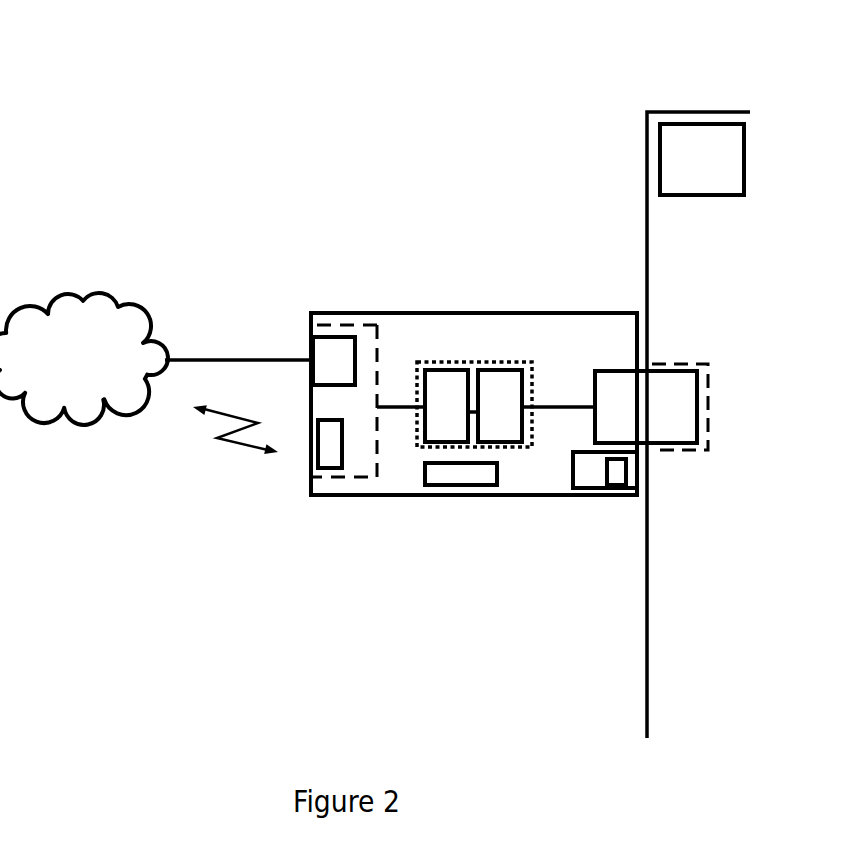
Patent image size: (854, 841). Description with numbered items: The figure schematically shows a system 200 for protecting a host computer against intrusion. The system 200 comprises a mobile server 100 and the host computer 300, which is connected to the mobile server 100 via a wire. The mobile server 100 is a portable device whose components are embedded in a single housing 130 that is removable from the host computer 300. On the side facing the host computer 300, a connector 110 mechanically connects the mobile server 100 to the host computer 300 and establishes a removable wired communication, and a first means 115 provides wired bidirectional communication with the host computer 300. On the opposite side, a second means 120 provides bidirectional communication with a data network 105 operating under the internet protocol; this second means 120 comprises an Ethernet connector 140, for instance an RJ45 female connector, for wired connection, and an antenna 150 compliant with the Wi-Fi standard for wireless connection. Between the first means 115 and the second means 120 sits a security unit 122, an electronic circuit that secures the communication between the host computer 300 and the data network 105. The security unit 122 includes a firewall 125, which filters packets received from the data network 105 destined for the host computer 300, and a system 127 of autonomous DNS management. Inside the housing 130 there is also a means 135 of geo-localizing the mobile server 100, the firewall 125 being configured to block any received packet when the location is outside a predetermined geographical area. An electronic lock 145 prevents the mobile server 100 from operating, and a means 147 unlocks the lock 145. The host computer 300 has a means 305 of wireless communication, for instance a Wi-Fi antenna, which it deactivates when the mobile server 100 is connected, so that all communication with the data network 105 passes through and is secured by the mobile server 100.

The mobile server 100 is at (465, 296).
The data network 105 is at (86, 274).
The connector 110 is at (662, 432).
The first means of wired bidirectional communication 115 is at (615, 383).
The second means of bidirectional communication 120 is at (360, 318).
The security unit 122 is at (518, 447).
The firewall 125 is at (435, 422).
The system of autonomous DNS management 127 is at (496, 383).
The housing 130 is at (580, 306).
The means of geo-localizing 135 is at (460, 485).
The Ethernet connector 140 is at (313, 350).
The electronic lock 145 is at (593, 473).
The means of unlocking 147 is at (618, 473).
The antenna 150 is at (325, 432).
The system 200 is at (523, 82).
The host computer 300 is at (630, 152).
The means of wireless communication 305 is at (712, 182).